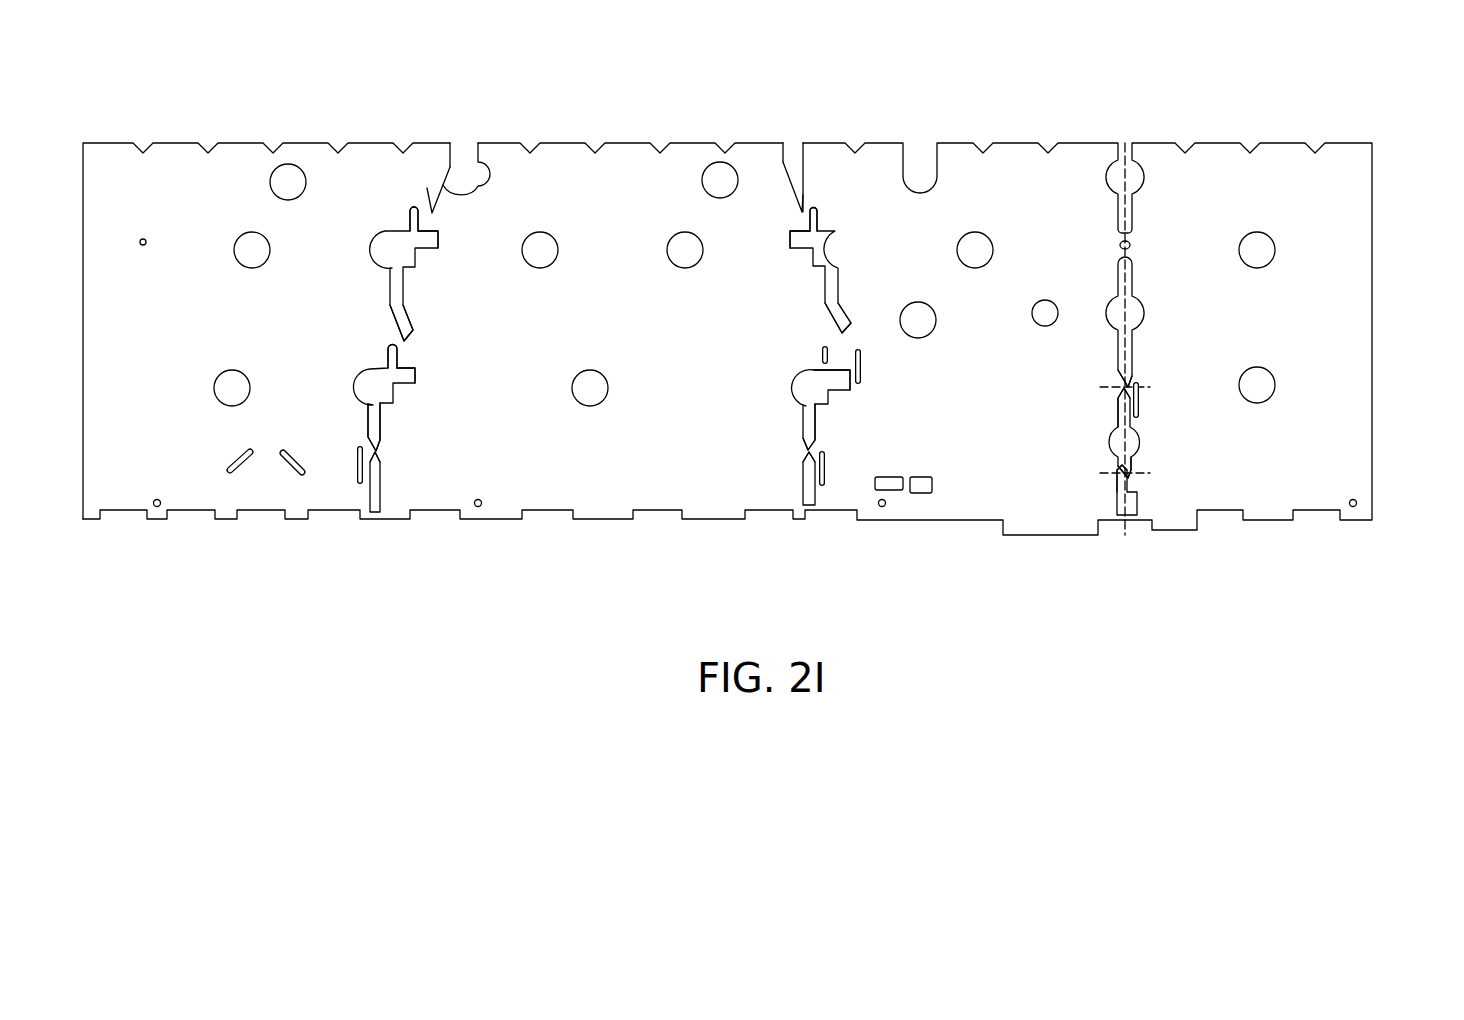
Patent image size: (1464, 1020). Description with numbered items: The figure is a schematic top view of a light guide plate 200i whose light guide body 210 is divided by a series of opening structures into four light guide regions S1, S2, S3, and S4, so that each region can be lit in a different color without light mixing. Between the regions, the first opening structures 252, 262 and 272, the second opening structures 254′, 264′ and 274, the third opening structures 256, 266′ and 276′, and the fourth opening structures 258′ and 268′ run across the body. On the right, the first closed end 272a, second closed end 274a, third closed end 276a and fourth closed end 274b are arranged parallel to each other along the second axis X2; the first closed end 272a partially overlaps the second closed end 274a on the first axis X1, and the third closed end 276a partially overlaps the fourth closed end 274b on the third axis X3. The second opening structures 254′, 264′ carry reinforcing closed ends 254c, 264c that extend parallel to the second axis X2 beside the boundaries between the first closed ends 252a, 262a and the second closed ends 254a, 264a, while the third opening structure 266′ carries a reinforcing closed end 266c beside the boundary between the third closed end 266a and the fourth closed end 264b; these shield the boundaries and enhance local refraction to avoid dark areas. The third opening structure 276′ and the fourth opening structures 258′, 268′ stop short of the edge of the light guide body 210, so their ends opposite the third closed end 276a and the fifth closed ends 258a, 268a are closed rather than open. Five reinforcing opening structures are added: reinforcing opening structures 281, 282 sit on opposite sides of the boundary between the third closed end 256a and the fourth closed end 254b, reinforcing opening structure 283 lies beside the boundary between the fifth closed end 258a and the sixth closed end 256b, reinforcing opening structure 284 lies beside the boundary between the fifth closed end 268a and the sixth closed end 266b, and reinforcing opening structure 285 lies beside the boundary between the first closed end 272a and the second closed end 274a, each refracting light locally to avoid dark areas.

The light guide body 210 is at (1335, 262).
The light guide region S1 is at (1218, 188).
The light guide region S2 is at (1010, 188).
The light guide region S3 is at (615, 188).
The light guide region S4 is at (178, 188).
The first axis X1 is at (1138, 388).
The second axis X2 is at (1126, 319).
The third axis X3 is at (1141, 477).
The light guide plate 200i is at (1410, 588).
The first opening structure 262 is at (470, 190).
The first closed end 262a is at (434, 195).
The second opening structure 264′ is at (408, 265).
The second closed end 264a is at (428, 239).
The fourth closed end 264b is at (403, 330).
The reinforcing closed end 264c is at (410, 220).
The third opening structure 266′ is at (392, 400).
The third closed end 266a is at (419, 379).
The sixth closed end 266b is at (372, 430).
The reinforcing closed end 266c is at (388, 356).
The fourth opening structure 268′ is at (370, 500).
The fifth closed end 268a is at (378, 468).
The reinforcing opening structure 284 is at (358, 462).
The first opening structure 252 is at (800, 170).
The first closed end 252a is at (805, 194).
The second opening structure 254′ is at (848, 262).
The second closed end 254a is at (787, 240).
The fourth closed end 254b is at (848, 324).
The reinforcing closed end 254c is at (817, 222).
The third opening structure 256 is at (830, 395).
The third closed end 256a is at (838, 372).
The sixth closed end 256b is at (810, 436).
The fourth opening structure 258′ is at (803, 495).
The fifth closed end 258a is at (801, 470).
The reinforcing opening structure 281 is at (822, 348).
The reinforcing opening structure 282 is at (862, 366).
The reinforcing opening structure 283 is at (822, 487).
The first opening structure 272 is at (1138, 310).
The first closed end 272a is at (1128, 368).
The second opening structure 274 is at (1140, 438).
The second closed end 274a is at (1117, 406).
The fourth closed end 274b is at (1130, 464).
The third opening structure 276′ is at (1135, 507).
The third closed end 276a is at (1117, 490).
The reinforcing opening structure 285 is at (1140, 404).